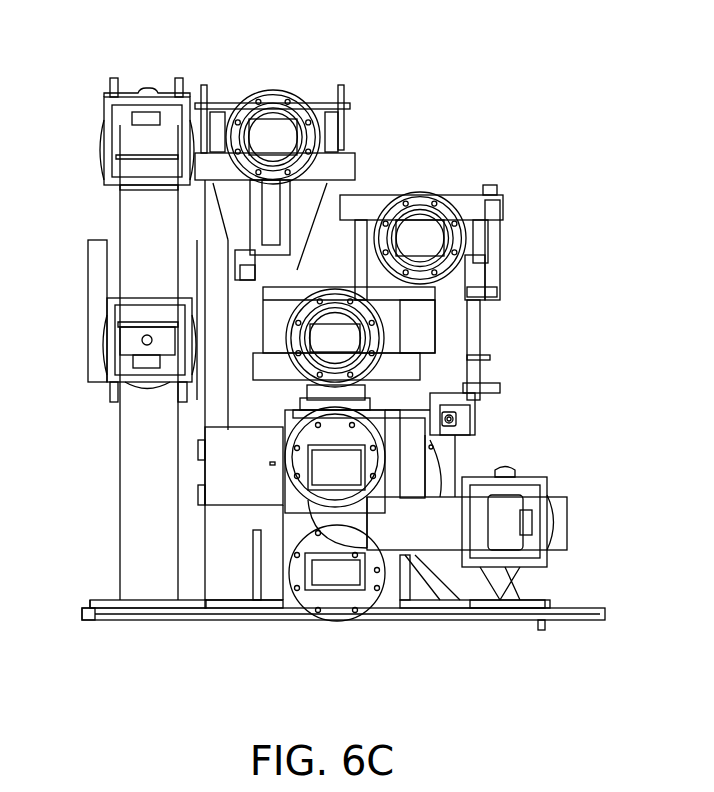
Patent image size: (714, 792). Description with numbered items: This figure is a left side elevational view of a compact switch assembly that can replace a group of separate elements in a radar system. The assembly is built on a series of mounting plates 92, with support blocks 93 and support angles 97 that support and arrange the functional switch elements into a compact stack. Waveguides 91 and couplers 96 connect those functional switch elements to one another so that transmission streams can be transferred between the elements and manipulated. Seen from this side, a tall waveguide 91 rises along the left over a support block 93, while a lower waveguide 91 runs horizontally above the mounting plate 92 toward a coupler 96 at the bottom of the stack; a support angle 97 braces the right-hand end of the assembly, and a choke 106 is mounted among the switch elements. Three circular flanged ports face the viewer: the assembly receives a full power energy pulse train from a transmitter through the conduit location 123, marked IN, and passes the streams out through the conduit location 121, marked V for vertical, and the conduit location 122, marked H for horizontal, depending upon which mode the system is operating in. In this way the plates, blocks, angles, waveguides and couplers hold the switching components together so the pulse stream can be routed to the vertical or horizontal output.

The waveguide 91 is at (132, 196).
The mounting plate 92 is at (150, 620).
The support block 93 is at (140, 470).
The coupler 96 is at (340, 603).
The support angle 97 is at (485, 596).
The choke 106 is at (470, 424).
The conduit location (Vertical) 121 is at (302, 88).
The conduit location (Horizontal) 122 is at (432, 188).
The conduit location 123 is at (385, 324).